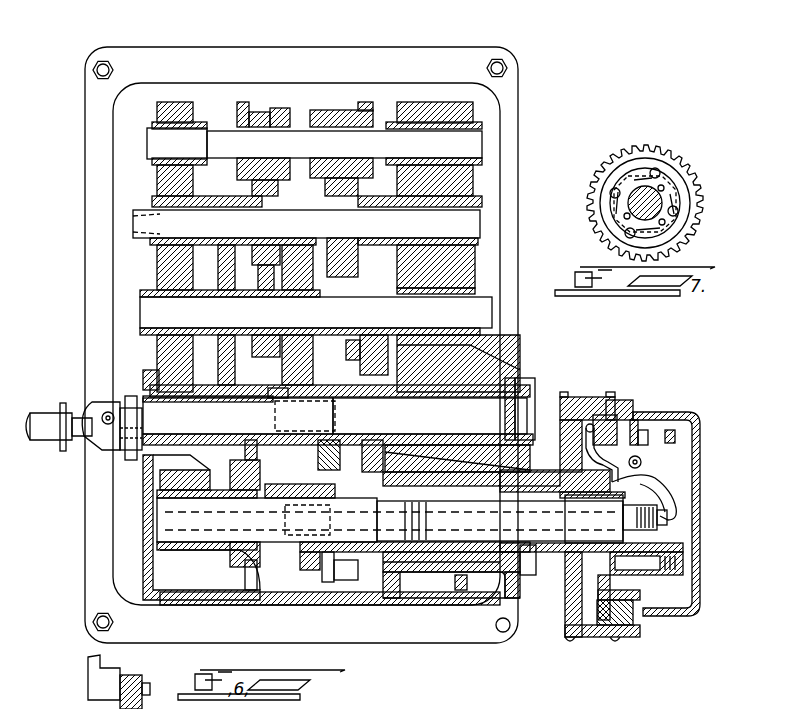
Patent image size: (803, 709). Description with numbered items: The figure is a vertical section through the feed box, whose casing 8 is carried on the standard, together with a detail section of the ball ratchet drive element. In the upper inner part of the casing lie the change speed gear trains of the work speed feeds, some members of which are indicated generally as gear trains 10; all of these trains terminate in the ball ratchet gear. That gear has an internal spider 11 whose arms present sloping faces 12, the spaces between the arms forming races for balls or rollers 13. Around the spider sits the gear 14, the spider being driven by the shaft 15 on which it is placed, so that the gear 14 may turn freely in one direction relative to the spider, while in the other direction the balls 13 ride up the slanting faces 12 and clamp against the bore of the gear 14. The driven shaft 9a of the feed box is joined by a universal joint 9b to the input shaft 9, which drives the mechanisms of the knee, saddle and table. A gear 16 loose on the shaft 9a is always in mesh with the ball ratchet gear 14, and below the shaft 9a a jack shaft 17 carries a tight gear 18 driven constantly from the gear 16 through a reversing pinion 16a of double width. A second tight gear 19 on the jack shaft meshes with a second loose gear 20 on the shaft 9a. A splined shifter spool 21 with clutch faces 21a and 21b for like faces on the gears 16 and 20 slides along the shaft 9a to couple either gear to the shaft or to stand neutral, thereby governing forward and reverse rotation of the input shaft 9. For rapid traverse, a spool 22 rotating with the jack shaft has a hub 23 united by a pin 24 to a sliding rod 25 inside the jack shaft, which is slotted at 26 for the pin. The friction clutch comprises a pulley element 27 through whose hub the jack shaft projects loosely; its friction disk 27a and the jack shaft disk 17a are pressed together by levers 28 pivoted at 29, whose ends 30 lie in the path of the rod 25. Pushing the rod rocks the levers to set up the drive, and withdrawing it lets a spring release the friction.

In FIG. 6, the casing of the feed box 8 is at (398, 598).
In FIG. 6, the input shaft 9 is at (42, 425).
In FIG. 6, the driven shaft of the feed box 9a is at (530, 395).
In FIG. 6, the universal joint 9b is at (110, 428).
In FIG. 6, the members of the gear trains 10 is at (318, 165).
In FIG. 7, the internal spider 11 is at (660, 235).
In FIG. 7, the sloping faces 12 is at (620, 228).
In FIG. 6, the balls or rollers 13 is at (366, 340).
In FIG. 7, the balls or rollers 13 is at (660, 171).
In FIG. 6, the gear 14 is at (410, 258).
In FIG. 7, the gear 14 is at (638, 150).
In FIG. 6, the shaft 15 is at (468, 312).
In FIG. 7, the shaft 15 is at (663, 213).
In FIG. 6, the gear 16 is at (380, 398).
In FIG. 6, the reversing pinion 16a is at (525, 406).
In FIG. 6, the jack shaft 17 is at (175, 517).
In FIG. 6, the friction disk for the jack shaft 17a is at (684, 416).
In FIG. 6, the tight gear 18 is at (405, 598).
In FIG. 6, the tight gear 19 is at (255, 556).
In FIG. 6, the loose gear 20 is at (238, 416).
In FIG. 6, the splined shifter spool 21 is at (305, 414).
In FIG. 6, the clutch face 21a is at (278, 396).
In FIG. 6, the clutch face 21b is at (325, 455).
In FIG. 6, the spool 22 is at (316, 556).
In FIG. 6, the hub 23 is at (320, 565).
In FIG. 6, the pin 24 is at (270, 500).
In FIG. 6, the sliding rod 25 is at (390, 520).
In FIG. 6, the slot 26 is at (275, 528).
In FIG. 6, the pulley element 27 is at (590, 398).
In FIG. 6, the friction disk for the pulley element 27a is at (640, 422).
In FIG. 6, the lever 28 is at (665, 472).
In FIG. 6, the pivot 29 is at (641, 461).
In FIG. 6, the lever ends 30 is at (668, 512).